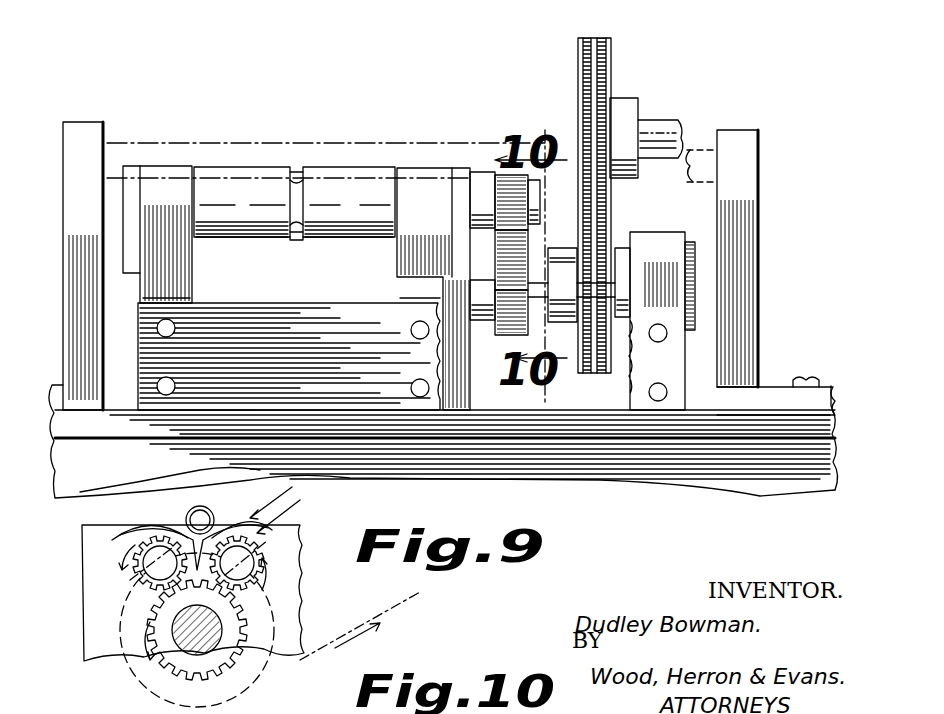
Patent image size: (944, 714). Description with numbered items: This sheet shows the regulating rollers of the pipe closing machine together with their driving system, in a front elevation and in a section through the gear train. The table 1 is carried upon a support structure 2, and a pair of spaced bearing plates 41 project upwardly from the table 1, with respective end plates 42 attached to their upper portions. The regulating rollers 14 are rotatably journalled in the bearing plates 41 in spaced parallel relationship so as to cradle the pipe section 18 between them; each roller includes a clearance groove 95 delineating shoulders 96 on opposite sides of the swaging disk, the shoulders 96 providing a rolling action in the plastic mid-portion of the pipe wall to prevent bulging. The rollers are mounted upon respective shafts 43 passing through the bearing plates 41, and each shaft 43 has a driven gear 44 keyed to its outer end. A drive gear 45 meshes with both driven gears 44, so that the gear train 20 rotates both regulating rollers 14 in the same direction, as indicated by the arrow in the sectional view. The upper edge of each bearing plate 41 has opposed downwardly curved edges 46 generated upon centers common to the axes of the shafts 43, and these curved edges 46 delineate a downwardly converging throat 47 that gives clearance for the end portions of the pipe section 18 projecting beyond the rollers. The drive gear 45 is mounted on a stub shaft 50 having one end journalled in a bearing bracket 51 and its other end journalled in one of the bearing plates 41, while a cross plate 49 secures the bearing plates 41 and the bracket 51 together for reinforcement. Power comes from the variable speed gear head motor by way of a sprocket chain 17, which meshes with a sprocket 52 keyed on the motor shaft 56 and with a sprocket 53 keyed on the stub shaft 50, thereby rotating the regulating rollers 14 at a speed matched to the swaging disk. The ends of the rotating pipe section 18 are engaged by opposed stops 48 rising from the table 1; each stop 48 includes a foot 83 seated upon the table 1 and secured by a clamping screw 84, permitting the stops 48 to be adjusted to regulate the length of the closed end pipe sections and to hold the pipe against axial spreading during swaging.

In FIG. 9, the table 1 is at (179, 434).
In FIG. 9, the support structure 2 is at (668, 464).
In FIG. 9, the regulating rollers 14 is at (349, 243).
In FIG. 10, the regulating rollers 14 is at (292, 505).
In FIG. 9, the sprocket chain 17 is at (580, 54).
In FIG. 10, the sprocket chain 17 is at (385, 610).
In FIG. 9, the pipe section 18 is at (145, 133).
In FIG. 10, the pipe section 18 is at (182, 512).
In FIG. 9, the gear train 20 is at (488, 162).
In FIG. 9, the bearing plates 41 is at (174, 289).
In FIG. 9, the end plates 42 is at (130, 203).
In FIG. 10, the end plates 42 is at (96, 610).
In FIG. 9, the shafts 43 is at (556, 210).
In FIG. 10, the shafts 43 is at (135, 575).
In FIG. 9, the driven gears 44 is at (528, 237).
In FIG. 10, the driven gears 44 is at (142, 545).
In FIG. 9, the drive gear 45 is at (505, 335).
In FIG. 10, the drive gear 45 is at (150, 624).
In FIG. 10, the curved edges 46 is at (152, 532).
In FIG. 10, the throat 47 is at (222, 512).
In FIG. 9, the stops 48 is at (84, 120).
In FIG. 9, the cross plate 49 is at (289, 356).
In FIG. 9, the stub shaft 50 is at (540, 325).
In FIG. 10, the stub shaft 50 is at (205, 628).
In FIG. 9, the bearing bracket 51 is at (668, 245).
In FIG. 9, the sprocket 52 is at (622, 108).
In FIG. 9, the sprocket 53 is at (615, 252).
In FIG. 10, the sprocket 53 is at (300, 602).
In FIG. 9, the shaft 56 is at (658, 134).
In FIG. 9, the foot 83 is at (770, 398).
In FIG. 9, the clamping screw 84 is at (800, 380).
In FIG. 9, the clearance groove 95 is at (296, 238).
In FIG. 9, the shoulders 96 is at (288, 190).